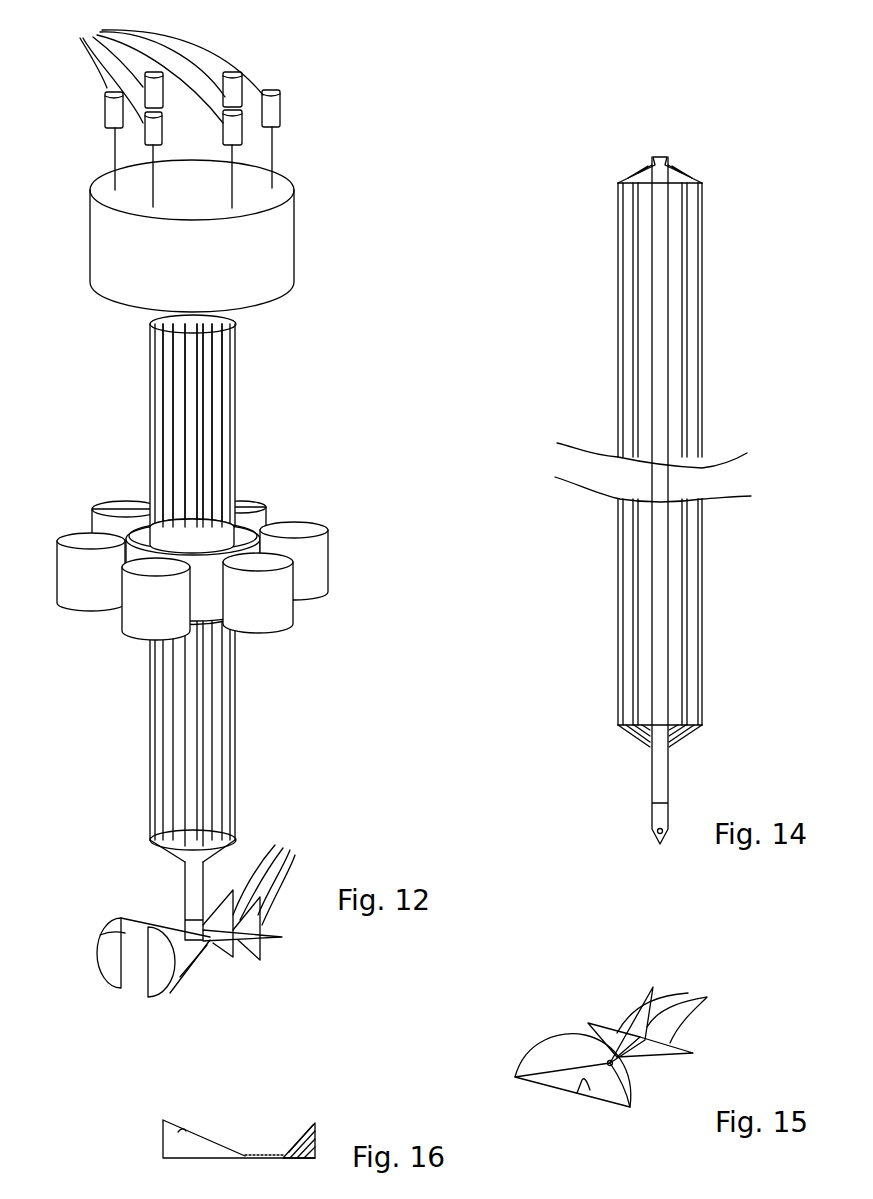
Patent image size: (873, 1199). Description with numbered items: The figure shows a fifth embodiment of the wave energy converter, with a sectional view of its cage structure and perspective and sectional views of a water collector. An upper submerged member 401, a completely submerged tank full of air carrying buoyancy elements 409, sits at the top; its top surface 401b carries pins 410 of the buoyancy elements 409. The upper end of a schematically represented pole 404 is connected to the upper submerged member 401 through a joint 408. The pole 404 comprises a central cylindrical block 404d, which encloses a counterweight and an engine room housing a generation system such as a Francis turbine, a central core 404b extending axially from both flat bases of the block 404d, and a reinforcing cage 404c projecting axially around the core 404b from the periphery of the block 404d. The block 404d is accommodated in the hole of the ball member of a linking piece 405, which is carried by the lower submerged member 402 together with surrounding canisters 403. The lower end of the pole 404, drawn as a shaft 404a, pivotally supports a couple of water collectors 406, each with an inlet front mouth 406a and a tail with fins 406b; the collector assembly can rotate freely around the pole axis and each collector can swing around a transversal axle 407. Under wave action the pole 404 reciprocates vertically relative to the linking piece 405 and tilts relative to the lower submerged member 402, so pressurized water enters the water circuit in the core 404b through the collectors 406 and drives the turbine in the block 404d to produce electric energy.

In FIG. 12, the upper submerged member 401 is at (300, 237).
In FIG. 12, the housing top surface 401b is at (283, 187).
In FIG. 12, the lower submerged member 402 is at (297, 510).
In FIG. 12, the cylindrical canisters 403 is at (248, 513).
In FIG. 12, the pole 404 is at (237, 701).
In FIG. 12, the shaft 404a is at (190, 923).
In FIG. 14, the shaft 404a is at (652, 814).
In FIG. 14, the central core 404b is at (672, 165).
In FIG. 12, the reinforcing cage 404c is at (217, 767).
In FIG. 14, the reinforcing cage 404c is at (618, 338).
In FIG. 12, the central cylindrical block 404d is at (163, 525).
In FIG. 12, the linking piece 405 is at (215, 633).
In FIG. 12, the water collectors 406 is at (107, 985).
In FIG. 15, the water collectors 406 is at (537, 1032).
In FIG. 16, the water collectors 406 is at (152, 1143).
In FIG. 12, the inlet front mouth 406a is at (102, 930).
In FIG. 15, the inlet front mouth 406a is at (577, 1082).
In FIG. 16, the inlet front mouth 406a is at (183, 1135).
In FIG. 12, the fins 406b is at (295, 855).
In FIG. 15, the fins 406b is at (676, 1014).
In FIG. 16, the fins 406b is at (307, 1128).
In FIG. 14, the transversal axle 407 is at (654, 835).
In FIG. 12, the joint 408 is at (222, 320).
In FIG. 12, the buoyancy elements 409 is at (154, 68).
In FIG. 12, the pins 410 is at (232, 185).